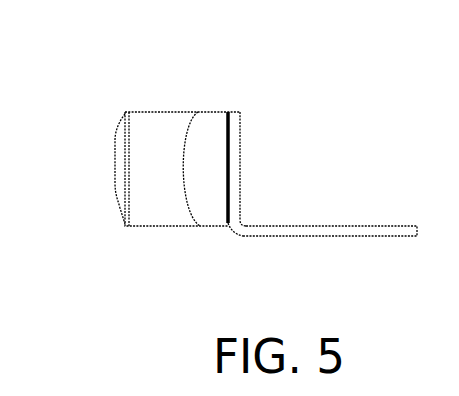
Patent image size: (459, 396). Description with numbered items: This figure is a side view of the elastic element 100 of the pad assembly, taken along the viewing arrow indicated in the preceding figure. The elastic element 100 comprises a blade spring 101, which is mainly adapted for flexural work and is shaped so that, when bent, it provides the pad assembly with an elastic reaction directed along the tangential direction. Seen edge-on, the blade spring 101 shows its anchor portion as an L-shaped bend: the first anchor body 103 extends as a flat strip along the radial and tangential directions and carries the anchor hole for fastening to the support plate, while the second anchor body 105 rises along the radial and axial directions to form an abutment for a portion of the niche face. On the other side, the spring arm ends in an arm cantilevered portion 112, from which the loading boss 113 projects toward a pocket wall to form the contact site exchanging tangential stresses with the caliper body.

The elastic element 100 is at (224, 162).
The blade spring 101 is at (224, 162).
The first anchor body 103 is at (363, 230).
The second anchor body 105 is at (236, 167).
The arm cantilevered portion 112 is at (208, 200).
The loading boss 113 is at (115, 183).